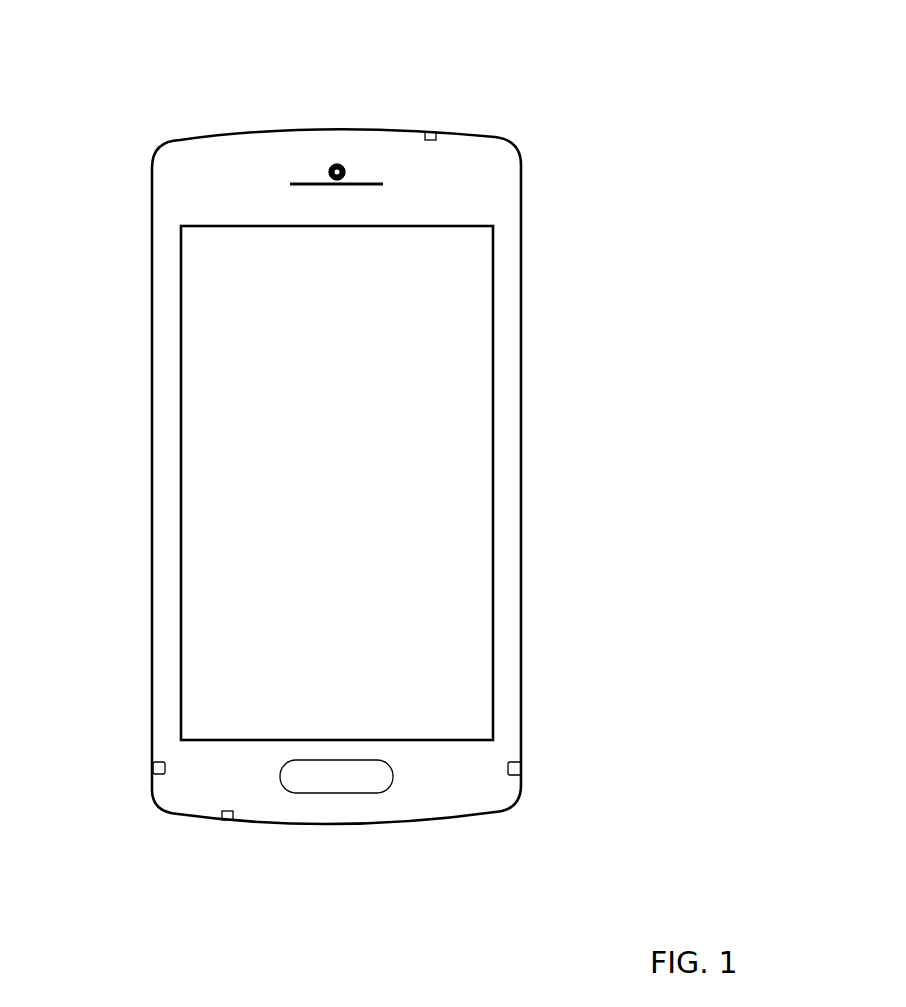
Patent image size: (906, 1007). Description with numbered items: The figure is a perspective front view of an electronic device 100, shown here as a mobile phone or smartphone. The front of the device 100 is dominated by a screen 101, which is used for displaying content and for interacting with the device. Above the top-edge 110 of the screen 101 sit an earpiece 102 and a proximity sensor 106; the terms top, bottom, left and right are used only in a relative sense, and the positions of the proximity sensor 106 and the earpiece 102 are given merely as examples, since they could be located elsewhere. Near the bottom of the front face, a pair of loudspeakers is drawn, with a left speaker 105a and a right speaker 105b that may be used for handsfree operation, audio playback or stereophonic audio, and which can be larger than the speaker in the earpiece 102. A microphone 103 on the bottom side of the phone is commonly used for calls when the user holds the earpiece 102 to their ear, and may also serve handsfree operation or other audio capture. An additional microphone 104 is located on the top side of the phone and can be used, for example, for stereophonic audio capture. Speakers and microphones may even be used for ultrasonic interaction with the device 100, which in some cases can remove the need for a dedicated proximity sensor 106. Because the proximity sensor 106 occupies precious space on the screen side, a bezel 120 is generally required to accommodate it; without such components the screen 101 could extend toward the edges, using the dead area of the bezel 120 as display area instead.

The electronic device 100 is at (410, 469).
The screen 101 is at (457, 360).
The earpiece 102 is at (317, 184).
The microphone 103 is at (230, 820).
The microphone 104 is at (432, 130).
The left speaker 105a is at (153, 760).
The right speaker 105b is at (522, 768).
The proximity sensor 106 is at (336, 165).
The top-edge 110 is at (433, 455).
The bezel 120 is at (193, 183).